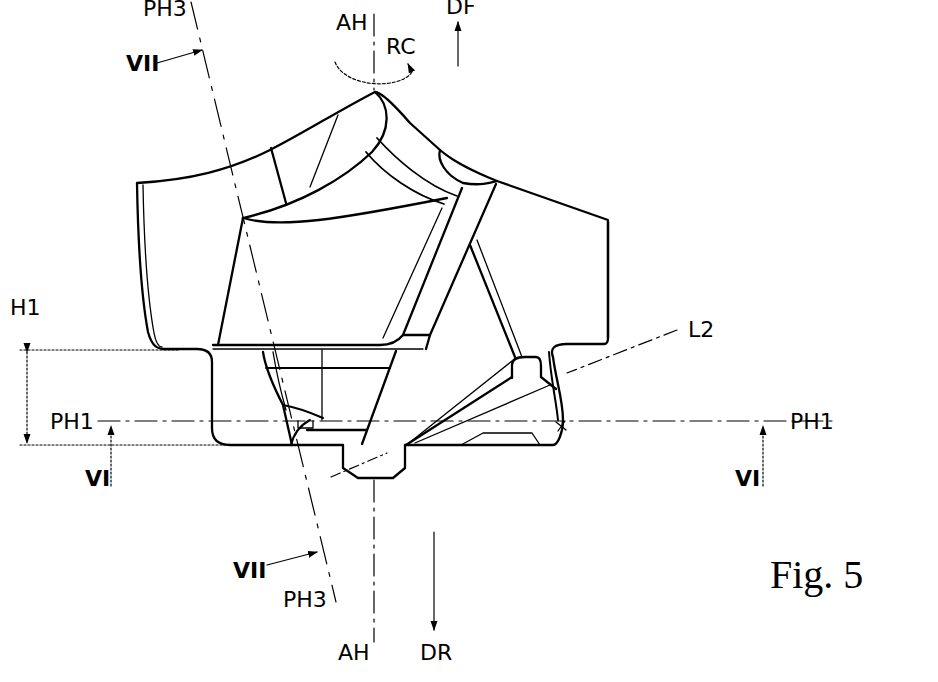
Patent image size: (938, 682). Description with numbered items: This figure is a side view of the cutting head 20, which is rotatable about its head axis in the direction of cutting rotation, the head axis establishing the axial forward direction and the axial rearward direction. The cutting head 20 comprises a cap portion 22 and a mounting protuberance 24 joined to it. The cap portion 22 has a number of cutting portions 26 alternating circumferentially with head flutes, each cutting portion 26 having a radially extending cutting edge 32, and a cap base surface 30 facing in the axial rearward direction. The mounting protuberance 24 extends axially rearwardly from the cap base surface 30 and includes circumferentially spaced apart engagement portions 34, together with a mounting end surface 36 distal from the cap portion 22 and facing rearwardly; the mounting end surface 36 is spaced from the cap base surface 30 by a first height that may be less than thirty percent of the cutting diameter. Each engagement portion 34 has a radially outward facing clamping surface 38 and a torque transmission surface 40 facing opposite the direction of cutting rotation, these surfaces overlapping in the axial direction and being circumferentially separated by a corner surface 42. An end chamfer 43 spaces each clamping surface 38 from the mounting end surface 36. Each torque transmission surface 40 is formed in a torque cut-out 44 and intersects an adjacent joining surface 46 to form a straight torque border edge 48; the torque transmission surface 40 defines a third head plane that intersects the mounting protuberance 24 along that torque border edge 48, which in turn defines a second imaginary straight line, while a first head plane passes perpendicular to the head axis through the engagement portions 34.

The cutting head 20 is at (539, 107).
The cap portion 22 is at (614, 246).
The mounting protuberance 24 is at (567, 383).
The cutting portion 26 is at (286, 139).
The cap base surface 30 is at (176, 354).
The radially extending cutting edge 32 is at (193, 178).
The engagement portion 34 is at (288, 447).
The mounting end surface 36 is at (262, 447).
The clamping surface 38 is at (366, 406).
The torque transmission surface 40 is at (281, 397).
The corner surface 42 is at (311, 397).
The end chamfer 43 is at (551, 444).
The torque cut-out 44 is at (502, 427).
The joining surface 46 is at (417, 446).
The torque border edge 48 is at (440, 442).